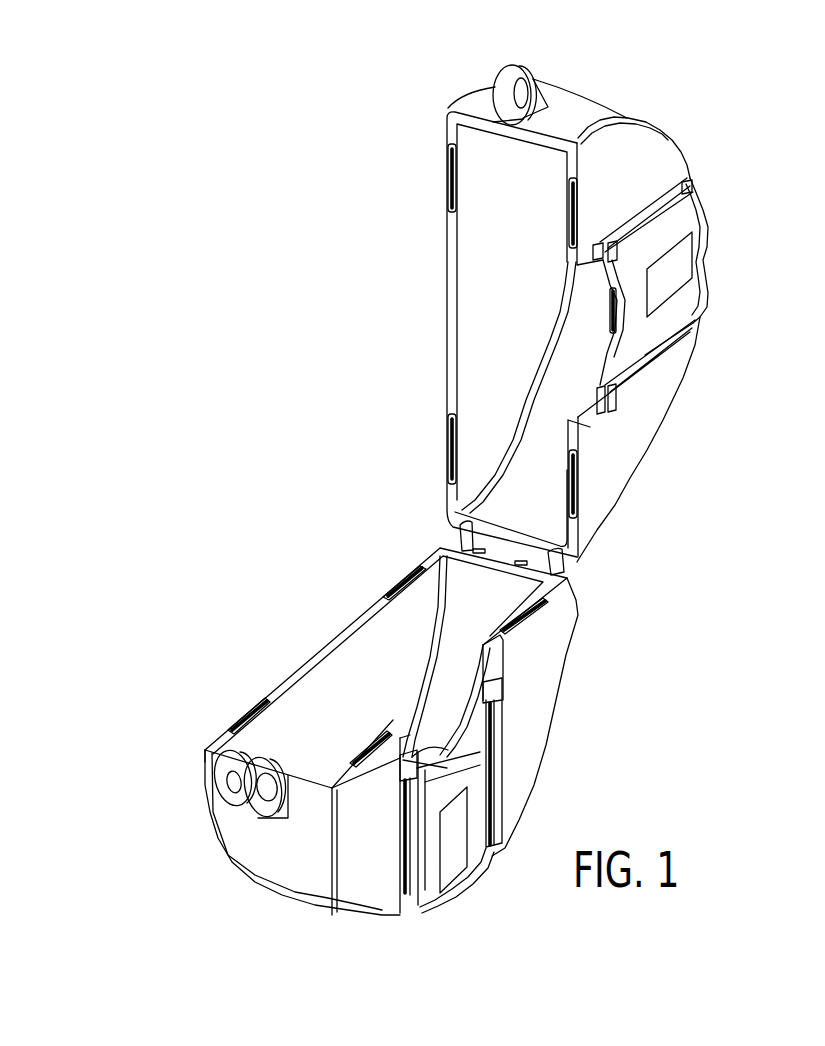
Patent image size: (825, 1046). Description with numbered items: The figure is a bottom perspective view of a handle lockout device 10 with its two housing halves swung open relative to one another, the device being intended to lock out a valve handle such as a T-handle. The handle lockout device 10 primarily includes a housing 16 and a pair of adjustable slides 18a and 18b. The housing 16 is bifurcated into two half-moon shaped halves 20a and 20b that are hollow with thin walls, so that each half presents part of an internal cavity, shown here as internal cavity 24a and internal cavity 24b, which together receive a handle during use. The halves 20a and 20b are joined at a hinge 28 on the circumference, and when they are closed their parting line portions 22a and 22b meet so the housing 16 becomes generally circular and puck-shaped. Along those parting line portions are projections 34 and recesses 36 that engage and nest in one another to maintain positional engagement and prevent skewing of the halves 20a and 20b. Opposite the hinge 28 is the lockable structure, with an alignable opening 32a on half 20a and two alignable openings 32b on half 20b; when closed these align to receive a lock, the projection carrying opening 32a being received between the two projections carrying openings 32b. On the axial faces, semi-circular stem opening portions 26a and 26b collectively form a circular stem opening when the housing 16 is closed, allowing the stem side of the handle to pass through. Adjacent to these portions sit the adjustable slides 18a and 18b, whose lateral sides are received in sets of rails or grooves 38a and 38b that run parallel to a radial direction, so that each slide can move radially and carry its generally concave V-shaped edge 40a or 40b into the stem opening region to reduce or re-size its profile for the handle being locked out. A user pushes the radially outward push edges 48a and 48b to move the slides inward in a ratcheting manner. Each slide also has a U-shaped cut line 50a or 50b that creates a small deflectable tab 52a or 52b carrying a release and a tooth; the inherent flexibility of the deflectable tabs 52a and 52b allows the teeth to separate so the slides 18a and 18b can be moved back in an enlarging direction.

The handle lockout device 10 is at (284, 298).
The housing 16 is at (595, 520).
The adjustable slide 18a is at (711, 267).
The adjustable slide 18b is at (473, 846).
The half 20a is at (643, 138).
The half 20b is at (530, 702).
The parting line portion 22a is at (453, 393).
The parting line portion 22b is at (360, 617).
The internal cavity 24a is at (473, 326).
The internal cavity 24b is at (320, 677).
The stem opening portion 26a is at (587, 398).
The stem opening portion 26b is at (490, 663).
The hinge 28 is at (488, 543).
The alignable opening 32a is at (522, 92).
The alignable openings 32b is at (232, 800).
The projections 34 is at (448, 452).
The recesses 36 is at (450, 173).
The rails or grooves 38a is at (643, 227).
The rails or grooves 38b is at (500, 770).
The edge 40a is at (613, 353).
The edge 40b is at (472, 731).
The push edge 48a is at (710, 292).
The push edge 48b is at (460, 883).
The U-shaped cut line 50a is at (670, 301).
The U-shaped cut line 50b is at (470, 827).
The deflectable tab 52a is at (675, 267).
The deflectable tab 52b is at (447, 840).